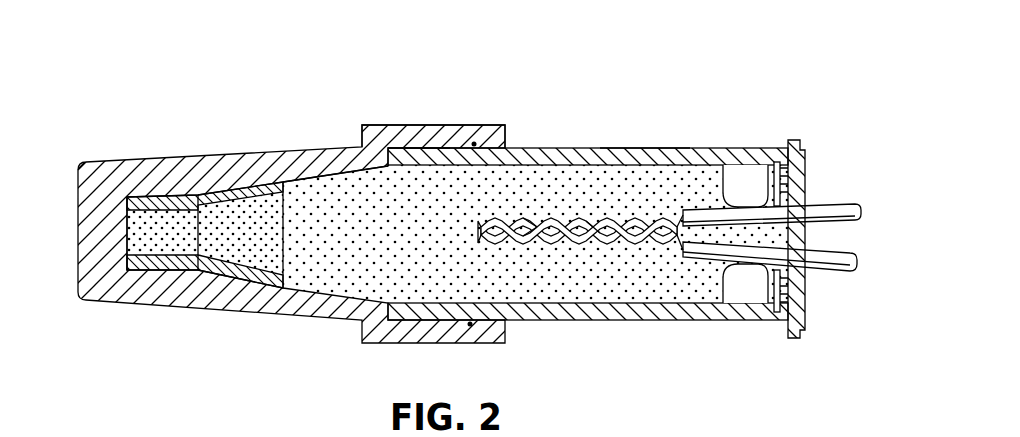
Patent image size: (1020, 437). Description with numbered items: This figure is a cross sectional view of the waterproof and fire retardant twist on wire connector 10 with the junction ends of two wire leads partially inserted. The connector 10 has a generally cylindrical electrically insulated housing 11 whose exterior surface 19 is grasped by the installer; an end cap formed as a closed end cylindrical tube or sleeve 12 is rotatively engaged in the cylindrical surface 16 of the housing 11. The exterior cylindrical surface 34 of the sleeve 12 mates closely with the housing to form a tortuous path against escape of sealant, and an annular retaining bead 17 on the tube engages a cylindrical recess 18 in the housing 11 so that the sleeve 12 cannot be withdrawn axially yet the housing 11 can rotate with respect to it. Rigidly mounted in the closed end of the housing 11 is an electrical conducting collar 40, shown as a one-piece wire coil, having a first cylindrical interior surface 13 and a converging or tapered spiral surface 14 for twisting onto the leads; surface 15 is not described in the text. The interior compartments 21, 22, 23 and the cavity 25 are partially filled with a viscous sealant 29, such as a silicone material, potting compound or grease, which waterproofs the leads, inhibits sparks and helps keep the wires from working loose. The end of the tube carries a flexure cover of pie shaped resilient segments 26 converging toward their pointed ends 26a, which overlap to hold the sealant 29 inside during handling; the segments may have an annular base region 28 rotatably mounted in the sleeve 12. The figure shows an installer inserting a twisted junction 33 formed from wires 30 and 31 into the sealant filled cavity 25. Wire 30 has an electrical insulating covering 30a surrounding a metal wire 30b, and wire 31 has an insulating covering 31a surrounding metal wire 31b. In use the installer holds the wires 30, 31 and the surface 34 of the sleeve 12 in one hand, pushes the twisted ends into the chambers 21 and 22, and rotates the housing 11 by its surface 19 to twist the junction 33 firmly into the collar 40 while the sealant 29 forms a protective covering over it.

The twist on wire connector 10 is at (303, 85).
The housing 11 is at (246, 152).
The sleeve 12 is at (600, 152).
The first cylindrical interior surface 13 is at (125, 223).
The spiral surface 14 is at (205, 200).
The tapered inner surface 15 is at (328, 170).
The cylindrical surface 16 is at (436, 150).
The retaining bead 17 is at (470, 326).
The cylindrical recess 18 is at (108, 162).
The exterior surface 19 is at (385, 140).
The interior compartment 21 is at (171, 244).
The interior compartment 22 is at (251, 244).
The interior compartment 23 is at (345, 249).
The sealant filled cavity 25 is at (443, 247).
The resilient segments 26 is at (771, 160).
The pointed end 26a is at (723, 168).
The annular base region 28 is at (795, 140).
The viscous sealant 29 is at (590, 248).
The wire 30 is at (858, 204).
The electrical insulating covering 30a is at (672, 221).
The metal wire 30b is at (533, 245).
The wire 31 is at (850, 273).
The electrical insulating covering 31a is at (702, 262).
The metal wire 31b is at (530, 215).
The twisted junction 33 is at (642, 250).
The exterior cylindrical surface 34 is at (642, 150).
The electrical conducting collar 40 is at (152, 197).